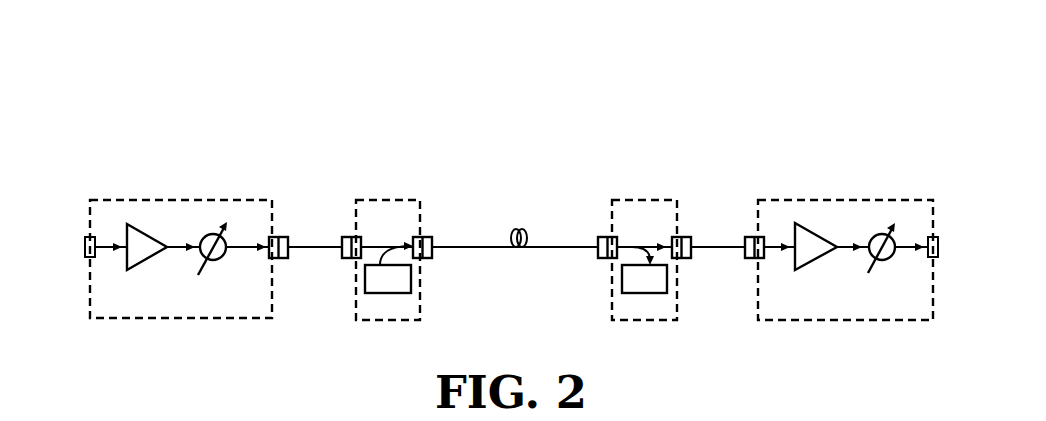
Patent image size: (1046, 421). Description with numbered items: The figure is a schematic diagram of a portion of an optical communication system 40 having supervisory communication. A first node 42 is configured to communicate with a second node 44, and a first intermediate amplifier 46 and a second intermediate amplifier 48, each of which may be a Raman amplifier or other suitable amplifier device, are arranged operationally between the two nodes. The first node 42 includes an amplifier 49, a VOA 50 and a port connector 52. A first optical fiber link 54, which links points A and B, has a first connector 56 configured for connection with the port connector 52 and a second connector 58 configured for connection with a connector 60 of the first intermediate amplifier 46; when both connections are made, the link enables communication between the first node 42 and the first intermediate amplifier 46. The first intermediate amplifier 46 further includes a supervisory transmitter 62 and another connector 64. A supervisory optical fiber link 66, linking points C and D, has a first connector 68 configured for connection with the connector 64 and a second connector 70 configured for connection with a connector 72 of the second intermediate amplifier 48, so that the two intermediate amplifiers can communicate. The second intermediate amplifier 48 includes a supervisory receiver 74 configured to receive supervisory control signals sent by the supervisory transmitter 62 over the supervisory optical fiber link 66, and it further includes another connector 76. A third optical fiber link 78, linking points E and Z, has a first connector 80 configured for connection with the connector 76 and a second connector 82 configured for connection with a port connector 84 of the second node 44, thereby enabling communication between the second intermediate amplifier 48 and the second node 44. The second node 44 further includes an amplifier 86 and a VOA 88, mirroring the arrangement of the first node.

The optical communication system 40 is at (303, 107).
The first node 42 is at (223, 200).
The second node 44 is at (893, 200).
The first intermediate amplifier 46 is at (368, 200).
The second intermediate amplifier 48 is at (627, 200).
The amplifier 49 is at (147, 265).
The VOA 50 is at (207, 233).
The port connector 52 is at (270, 262).
The first optical fiber link 54 is at (317, 247).
The first connector 56 is at (283, 258).
The second connector 58 is at (347, 258).
The connector 60 is at (363, 240).
The supervisory transmitter 62 is at (380, 293).
The connector 64 is at (412, 238).
The optical fiber link 66 is at (492, 247).
The first connector 68 is at (430, 258).
The second connector 70 is at (600, 258).
The connector 72 is at (618, 240).
The supervisory receiver 74 is at (650, 293).
The connector 76 is at (670, 238).
The optical fiber link 78 is at (715, 247).
The first connector 80 is at (685, 258).
The second connector 82 is at (750, 258).
The port connector 84 is at (764, 252).
The amplifier 86 is at (818, 262).
The VOA 88 is at (880, 231).